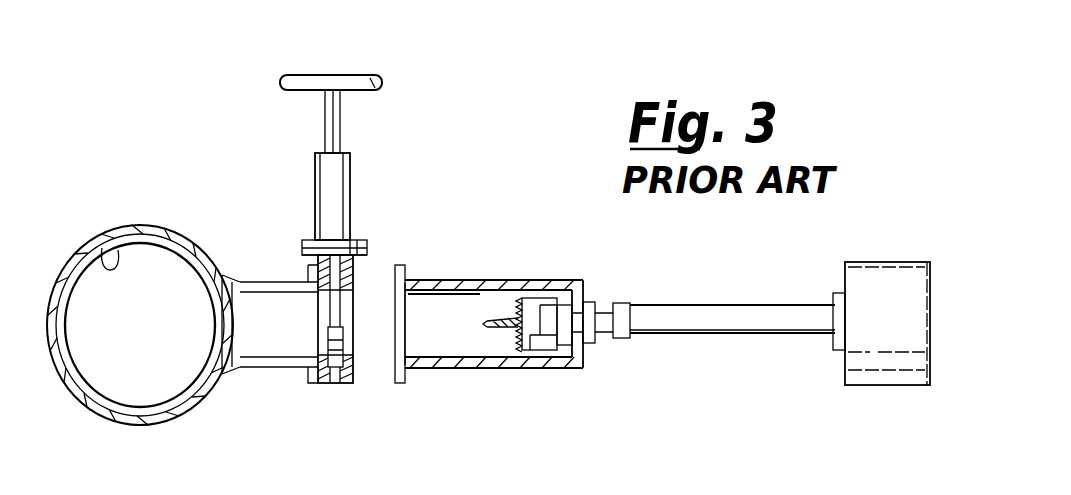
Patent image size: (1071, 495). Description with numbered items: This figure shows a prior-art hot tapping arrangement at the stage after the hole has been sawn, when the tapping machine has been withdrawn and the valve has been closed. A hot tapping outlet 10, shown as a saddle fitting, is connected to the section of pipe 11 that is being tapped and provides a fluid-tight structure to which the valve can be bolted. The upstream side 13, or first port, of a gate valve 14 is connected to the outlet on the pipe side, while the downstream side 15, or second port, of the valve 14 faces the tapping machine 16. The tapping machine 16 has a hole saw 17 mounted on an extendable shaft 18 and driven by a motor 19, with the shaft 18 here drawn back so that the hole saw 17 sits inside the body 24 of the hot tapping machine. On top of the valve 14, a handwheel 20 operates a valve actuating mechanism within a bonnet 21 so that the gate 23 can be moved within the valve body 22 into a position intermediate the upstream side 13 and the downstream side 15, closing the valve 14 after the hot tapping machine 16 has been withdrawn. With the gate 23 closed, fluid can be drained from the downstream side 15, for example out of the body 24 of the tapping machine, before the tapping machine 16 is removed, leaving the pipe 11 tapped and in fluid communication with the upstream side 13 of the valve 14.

The hot tapping outlet 10 is at (148, 226).
The pipe 11 is at (110, 237).
The upstream side 13 is at (300, 258).
The gate valve 14 is at (352, 169).
The downstream side 15 is at (362, 262).
The tapping machine 16 is at (586, 280).
The hole saw 17 is at (538, 342).
The extendable shaft 18 is at (575, 330).
The motor 19 is at (880, 378).
The handwheel 20 is at (282, 82).
The bonnet 21 is at (315, 183).
The valve body 22 is at (337, 385).
The gate 23 is at (326, 318).
The body of the hot tapping machine 24 is at (442, 370).